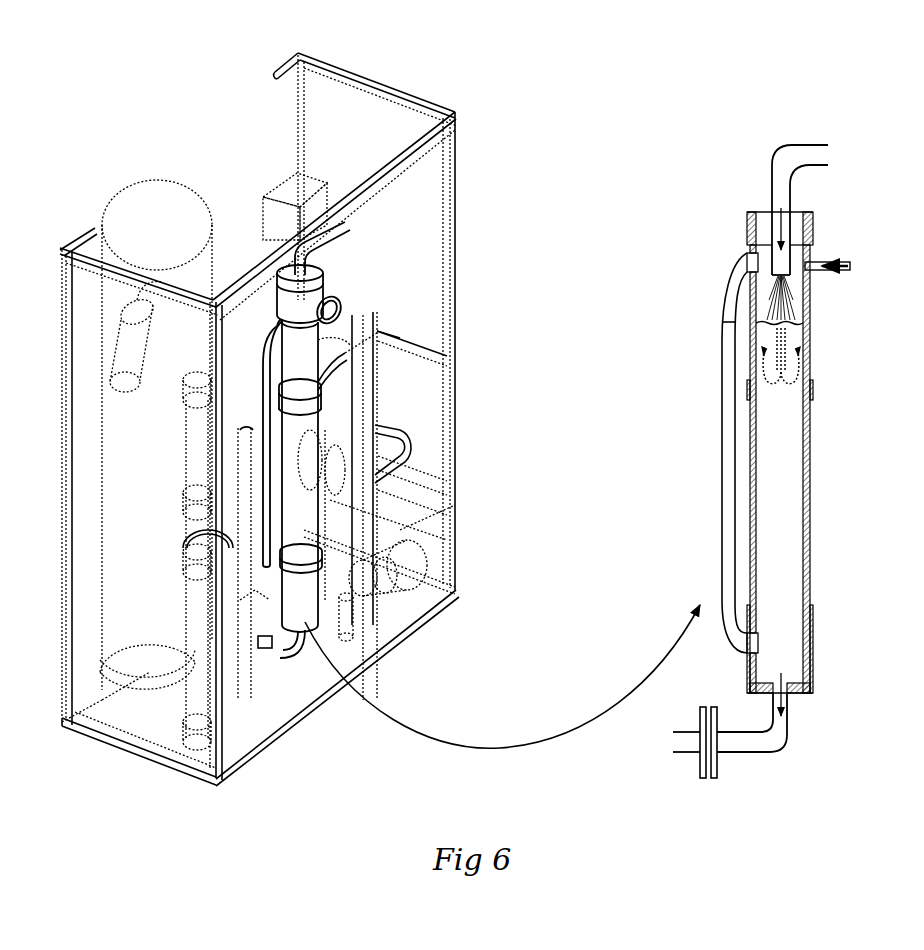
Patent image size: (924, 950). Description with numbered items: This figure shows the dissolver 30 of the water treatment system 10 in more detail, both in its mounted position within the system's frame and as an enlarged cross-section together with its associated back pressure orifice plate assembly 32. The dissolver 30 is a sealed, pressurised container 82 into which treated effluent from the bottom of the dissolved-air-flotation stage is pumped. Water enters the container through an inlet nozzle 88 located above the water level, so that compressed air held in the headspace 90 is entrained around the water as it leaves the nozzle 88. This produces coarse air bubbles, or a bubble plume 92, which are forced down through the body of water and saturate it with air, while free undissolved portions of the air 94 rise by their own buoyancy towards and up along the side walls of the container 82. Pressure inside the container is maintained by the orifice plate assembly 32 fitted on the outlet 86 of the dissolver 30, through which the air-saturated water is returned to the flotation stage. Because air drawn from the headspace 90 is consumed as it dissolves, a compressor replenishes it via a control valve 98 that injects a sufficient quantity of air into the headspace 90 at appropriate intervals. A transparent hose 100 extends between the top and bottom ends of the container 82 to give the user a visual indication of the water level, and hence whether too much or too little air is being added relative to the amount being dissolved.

The water treatment system 10 is at (232, 148).
The dissolver 30 is at (298, 590).
The orifice plate assembly 32 is at (706, 783).
The container 82 is at (808, 582).
The outlet 86 is at (788, 734).
The inlet nozzle 88 is at (790, 241).
The headspace 90 is at (768, 233).
The bubble plume 92 is at (790, 450).
The free undissolved portions of air 94 is at (806, 370).
The control valve 98 is at (855, 268).
The transparent hose 100 is at (727, 315).